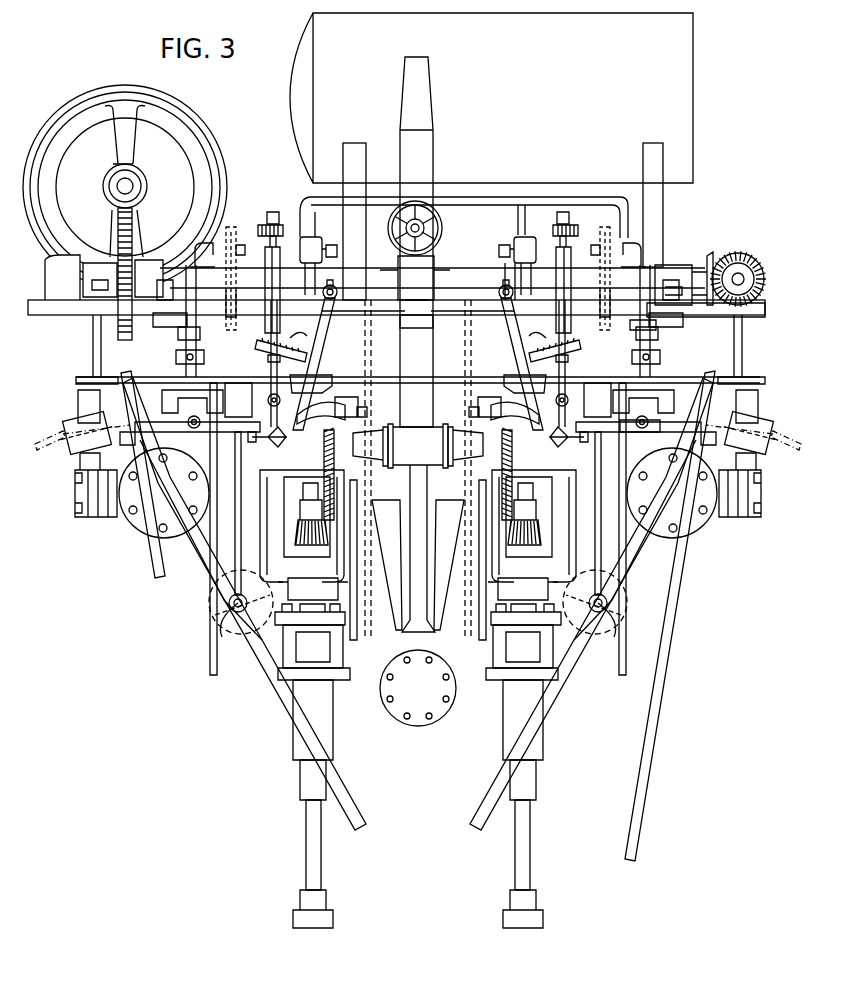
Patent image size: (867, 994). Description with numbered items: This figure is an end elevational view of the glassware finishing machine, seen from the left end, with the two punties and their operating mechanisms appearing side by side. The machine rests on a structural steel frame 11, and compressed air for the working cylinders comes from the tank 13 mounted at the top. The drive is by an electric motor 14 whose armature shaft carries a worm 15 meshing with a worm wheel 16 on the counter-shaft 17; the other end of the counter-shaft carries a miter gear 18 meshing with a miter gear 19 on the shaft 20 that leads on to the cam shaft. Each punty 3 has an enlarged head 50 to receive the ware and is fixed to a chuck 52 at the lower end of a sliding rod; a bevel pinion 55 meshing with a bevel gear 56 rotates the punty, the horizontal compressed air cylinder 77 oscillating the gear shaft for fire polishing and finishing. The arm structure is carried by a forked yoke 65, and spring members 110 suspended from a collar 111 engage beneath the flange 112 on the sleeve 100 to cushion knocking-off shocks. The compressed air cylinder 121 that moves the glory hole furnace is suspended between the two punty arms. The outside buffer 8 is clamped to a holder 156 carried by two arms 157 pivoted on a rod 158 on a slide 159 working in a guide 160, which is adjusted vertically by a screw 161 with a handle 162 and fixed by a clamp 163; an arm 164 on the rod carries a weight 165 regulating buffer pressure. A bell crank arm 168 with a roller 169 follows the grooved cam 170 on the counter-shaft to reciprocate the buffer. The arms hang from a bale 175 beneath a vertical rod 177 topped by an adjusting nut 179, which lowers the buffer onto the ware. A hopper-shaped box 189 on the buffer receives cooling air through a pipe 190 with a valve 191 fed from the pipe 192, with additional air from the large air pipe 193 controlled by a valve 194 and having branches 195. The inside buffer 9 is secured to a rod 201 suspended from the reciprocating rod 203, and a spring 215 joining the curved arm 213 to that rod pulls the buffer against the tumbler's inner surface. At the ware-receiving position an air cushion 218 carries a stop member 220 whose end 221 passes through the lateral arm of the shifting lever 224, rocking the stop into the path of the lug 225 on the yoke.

The punty 3 is at (530, 830).
The outside buffer 8 is at (462, 400).
The inside buffer 9 is at (574, 445).
The structural steel frame 11 is at (742, 350).
The tank 13 is at (680, 91).
The electric motor 14 is at (97, 112).
The worm 15 is at (103, 186).
The worm wheel 16 is at (114, 228).
The counter-shaft 17 is at (446, 280).
The miter gear 18 is at (712, 262).
The miter gear 19 is at (748, 262).
The shaft 20 is at (744, 279).
The enlarged head 50 is at (545, 918).
The chuck 52 is at (538, 777).
The bevel pinion 55 is at (565, 538).
The bevel gear 56 is at (506, 498).
The forked yoke 65 is at (568, 518).
The horizontal compressed air cylinder 77 is at (705, 527).
The sleeve 100 is at (507, 718).
The spring members 110 is at (522, 657).
The collar 111 is at (520, 608).
The flange 112 is at (522, 680).
The compressed air cylinder 121 is at (424, 728).
The holder 156 is at (492, 395).
The arms 157 is at (612, 420).
The rod 158 is at (646, 430).
The slide 159 is at (648, 408).
The guide 160 is at (680, 392).
The screw 161 is at (648, 340).
The handle 162 is at (645, 248).
The clamp 163 is at (680, 332).
The arm 164 is at (776, 438).
The weight 165 is at (760, 426).
The arm of bell crank 168 is at (590, 255).
The roller 169 is at (570, 243).
The cam 170 is at (615, 225).
The bale 175 is at (268, 385).
The vertical rod 177 is at (565, 210).
The adjusting nut 179 is at (562, 226).
The hopper-shaped box 189 is at (475, 368).
The pipe 190 is at (502, 300).
The valve 191 is at (512, 250).
The pipe 192 is at (442, 226).
The large air pipe 193 is at (440, 326).
The valve 194 is at (437, 208).
The branches 195 is at (490, 476).
The rod 201 is at (565, 496).
The reciprocating rod 203 is at (418, 326).
The curved arm 213 is at (572, 344).
The spring 215 is at (605, 345).
The air cushion 218 is at (606, 598).
The stop member 220 is at (418, 604).
The end of stop member 221 is at (612, 612).
The shifting lever 224 is at (626, 642).
The lug 225 is at (572, 566).